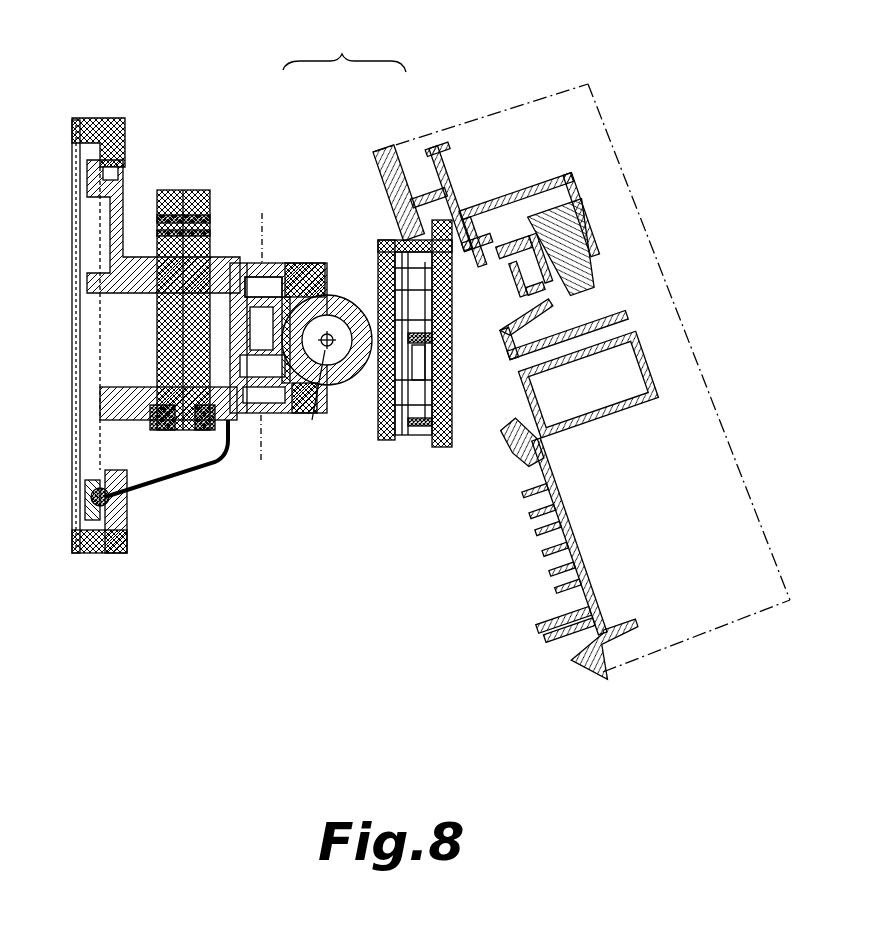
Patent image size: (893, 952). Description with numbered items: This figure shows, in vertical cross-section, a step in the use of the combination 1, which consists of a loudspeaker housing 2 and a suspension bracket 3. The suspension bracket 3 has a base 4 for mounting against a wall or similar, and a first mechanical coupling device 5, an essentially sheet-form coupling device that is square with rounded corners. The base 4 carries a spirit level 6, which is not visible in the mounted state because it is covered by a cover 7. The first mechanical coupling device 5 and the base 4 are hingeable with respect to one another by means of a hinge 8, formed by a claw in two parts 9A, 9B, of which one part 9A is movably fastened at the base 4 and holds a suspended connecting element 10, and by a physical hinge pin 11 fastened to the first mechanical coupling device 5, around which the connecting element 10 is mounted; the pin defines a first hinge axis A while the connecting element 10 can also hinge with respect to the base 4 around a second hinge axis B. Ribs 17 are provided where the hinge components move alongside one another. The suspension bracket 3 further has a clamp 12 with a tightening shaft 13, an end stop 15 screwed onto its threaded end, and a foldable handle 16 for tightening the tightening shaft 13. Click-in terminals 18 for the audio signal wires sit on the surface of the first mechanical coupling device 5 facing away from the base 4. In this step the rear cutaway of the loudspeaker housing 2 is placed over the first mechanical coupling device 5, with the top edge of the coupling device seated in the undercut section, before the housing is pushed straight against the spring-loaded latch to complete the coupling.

The combination 1 is at (344, 47).
The loudspeaker housing 2 is at (380, 114).
The suspension bracket 3 is at (272, 114).
The base 4 is at (104, 553).
The first mechanical coupling device 5 is at (405, 458).
The spirit level 6 is at (92, 497).
The cover 7 is at (112, 548).
The hinge 8 is at (277, 448).
The claw part 9A is at (297, 283).
The claw part 9B is at (305, 415).
The connecting element 10 is at (313, 297).
The physical hinge pin 11 is at (340, 358).
The clamp 12 is at (200, 170).
The tightening shaft 13 is at (160, 252).
The end stop 15 is at (203, 432).
The foldable handle 16 is at (206, 205).
The ribs 17 is at (338, 303).
The click-in terminals 18 is at (430, 378).